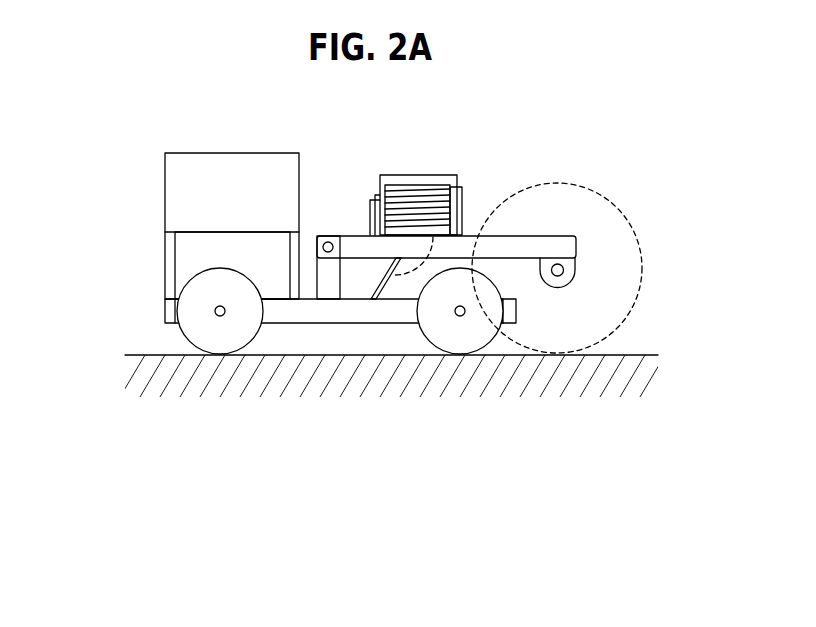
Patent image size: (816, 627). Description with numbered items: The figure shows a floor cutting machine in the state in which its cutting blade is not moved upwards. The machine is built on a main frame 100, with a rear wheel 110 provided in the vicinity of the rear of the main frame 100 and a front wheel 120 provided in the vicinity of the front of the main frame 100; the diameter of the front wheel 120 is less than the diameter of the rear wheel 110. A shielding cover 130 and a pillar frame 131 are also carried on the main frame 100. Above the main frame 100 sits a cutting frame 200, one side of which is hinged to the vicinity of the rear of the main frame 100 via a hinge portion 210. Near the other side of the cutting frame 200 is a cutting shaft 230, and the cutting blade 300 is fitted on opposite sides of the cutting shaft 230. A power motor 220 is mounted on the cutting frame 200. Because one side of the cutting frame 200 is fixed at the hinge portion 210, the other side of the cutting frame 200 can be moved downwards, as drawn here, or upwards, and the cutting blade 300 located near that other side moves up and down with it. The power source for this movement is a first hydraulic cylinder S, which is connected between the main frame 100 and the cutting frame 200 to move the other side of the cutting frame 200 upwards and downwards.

The main frame 100 is at (165, 318).
The rear wheel 110 is at (256, 339).
The front wheel 120 is at (428, 343).
The shielding cover 130 is at (165, 195).
The pillar frame 131 is at (165, 272).
The cutting frame 200 is at (350, 236).
The hinge portion 210 is at (318, 236).
The power motor 220 is at (413, 183).
The cutting shaft 230 is at (564, 257).
The cutting blade 300 is at (617, 207).
The first hydraulic cylinder S is at (455, 180).